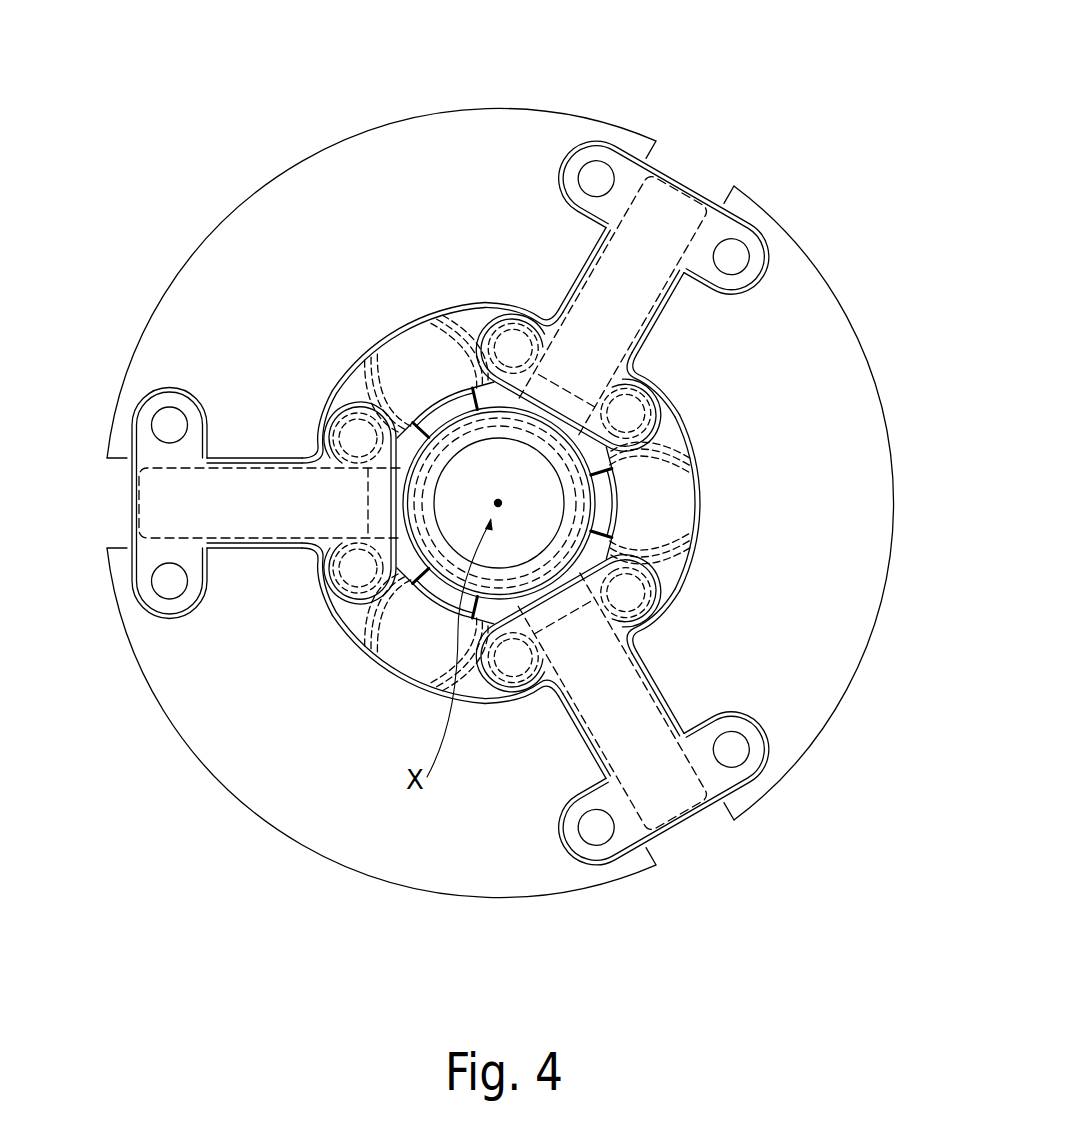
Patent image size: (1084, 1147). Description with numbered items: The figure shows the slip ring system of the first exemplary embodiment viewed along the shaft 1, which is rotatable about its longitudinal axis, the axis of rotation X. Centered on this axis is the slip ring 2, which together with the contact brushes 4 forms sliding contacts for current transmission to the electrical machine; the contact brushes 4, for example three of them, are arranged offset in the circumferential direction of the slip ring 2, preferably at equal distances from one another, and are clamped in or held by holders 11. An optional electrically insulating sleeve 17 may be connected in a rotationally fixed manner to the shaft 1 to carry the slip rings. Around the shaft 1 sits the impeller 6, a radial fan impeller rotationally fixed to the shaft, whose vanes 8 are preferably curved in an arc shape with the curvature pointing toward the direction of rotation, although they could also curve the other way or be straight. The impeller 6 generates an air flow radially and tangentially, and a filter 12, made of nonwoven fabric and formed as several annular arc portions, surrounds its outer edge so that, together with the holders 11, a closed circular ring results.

The shaft 1 is at (482, 460).
The slip ring 2 is at (453, 430).
The contact brush 4 is at (683, 203).
The impeller 6 is at (693, 515).
The vanes 8 is at (390, 357).
The holder 11 is at (618, 165).
The filter 12 is at (300, 193).
The sleeve 17 is at (413, 547).